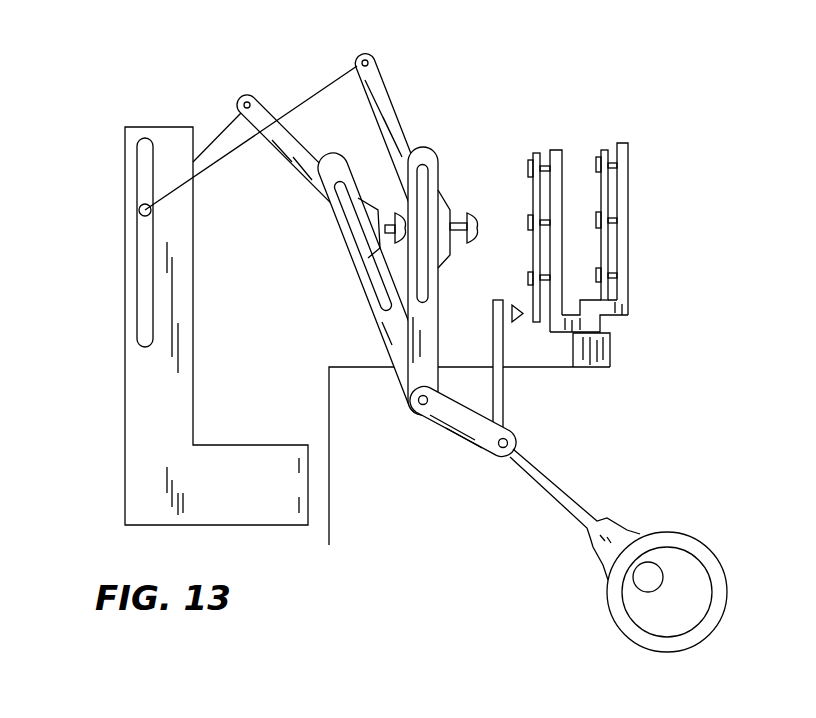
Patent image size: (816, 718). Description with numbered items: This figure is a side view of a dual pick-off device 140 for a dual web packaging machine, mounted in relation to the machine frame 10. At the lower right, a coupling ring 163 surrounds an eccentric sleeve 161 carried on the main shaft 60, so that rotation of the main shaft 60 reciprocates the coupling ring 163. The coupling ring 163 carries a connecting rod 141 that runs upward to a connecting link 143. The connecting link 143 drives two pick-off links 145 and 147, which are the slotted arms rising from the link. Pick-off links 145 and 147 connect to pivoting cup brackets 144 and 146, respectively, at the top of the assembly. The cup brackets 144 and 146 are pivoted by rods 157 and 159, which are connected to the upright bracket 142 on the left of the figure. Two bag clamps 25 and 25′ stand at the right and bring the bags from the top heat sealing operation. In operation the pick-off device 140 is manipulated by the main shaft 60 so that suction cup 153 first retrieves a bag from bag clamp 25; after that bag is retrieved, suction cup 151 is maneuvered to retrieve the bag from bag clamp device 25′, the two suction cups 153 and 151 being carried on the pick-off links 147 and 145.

The frame 10 is at (329, 522).
The bag clamp 25 is at (567, 177).
The bag clamp device 25′ is at (632, 170).
The main shaft 60 is at (650, 577).
The pick-off device 140 is at (313, 50).
The connecting rod 141 is at (553, 482).
The bracket 142 is at (147, 490).
The connecting link 143 is at (477, 420).
The pivoting cup bracket 144 is at (393, 97).
The pick-off link 145 is at (437, 323).
The pivoting cup bracket 146 is at (295, 167).
The pick-off link 147 is at (362, 293).
The suction cup 151 is at (477, 212).
The suction cup 153 is at (378, 205).
The rod 157 is at (217, 138).
The rod 159 is at (217, 138).
The eccentric sleeve 161 is at (660, 617).
The coupling ring 163 is at (667, 537).